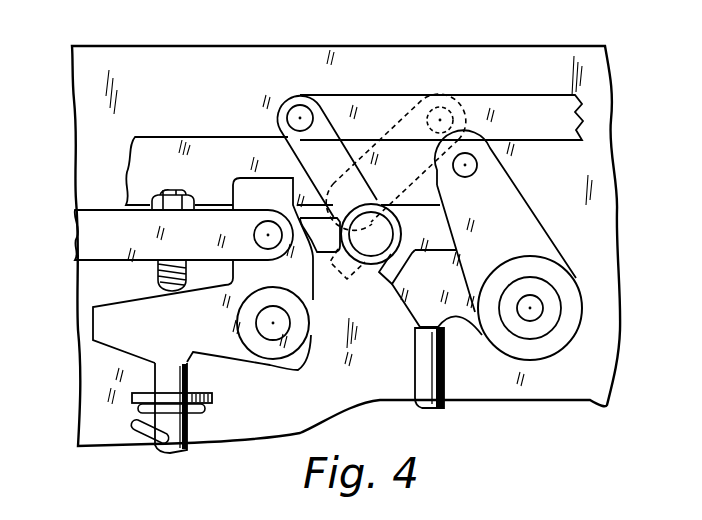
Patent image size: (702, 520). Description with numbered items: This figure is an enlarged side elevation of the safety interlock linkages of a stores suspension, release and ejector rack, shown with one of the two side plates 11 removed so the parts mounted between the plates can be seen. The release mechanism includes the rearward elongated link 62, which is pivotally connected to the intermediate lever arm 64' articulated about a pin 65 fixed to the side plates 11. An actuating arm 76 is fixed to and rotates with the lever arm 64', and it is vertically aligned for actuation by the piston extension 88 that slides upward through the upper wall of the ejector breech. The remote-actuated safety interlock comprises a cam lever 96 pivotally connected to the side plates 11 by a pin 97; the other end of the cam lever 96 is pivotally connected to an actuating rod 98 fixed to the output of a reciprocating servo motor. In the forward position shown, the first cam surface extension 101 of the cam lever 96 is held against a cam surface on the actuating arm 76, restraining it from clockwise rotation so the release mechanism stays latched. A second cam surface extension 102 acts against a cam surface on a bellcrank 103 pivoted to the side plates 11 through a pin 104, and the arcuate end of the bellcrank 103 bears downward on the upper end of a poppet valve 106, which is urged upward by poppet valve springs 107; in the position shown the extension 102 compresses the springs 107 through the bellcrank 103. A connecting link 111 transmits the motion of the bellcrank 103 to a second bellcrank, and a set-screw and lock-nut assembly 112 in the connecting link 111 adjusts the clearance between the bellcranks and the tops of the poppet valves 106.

The side plate 11 is at (132, 52).
The rearward elongated link 62 is at (215, 171).
The intermediate lever arm 64' is at (508, 245).
The pin 65 is at (534, 311).
The actuating arm 76 is at (417, 307).
The piston extension 88 is at (415, 349).
The cam lever 96 is at (333, 164).
The pin 97 is at (381, 242).
The actuating rod 98 is at (391, 100).
The first cam surface extension 101 is at (404, 262).
The second cam surface extension 102 is at (333, 280).
The bellcrank 103 is at (278, 280).
The pin 104 is at (284, 334).
The poppet valve 106 is at (178, 385).
The poppet valve spring 107 is at (205, 408).
The connecting link 111 is at (190, 246).
The set-screw and lock-nut assembly 112 is at (158, 267).